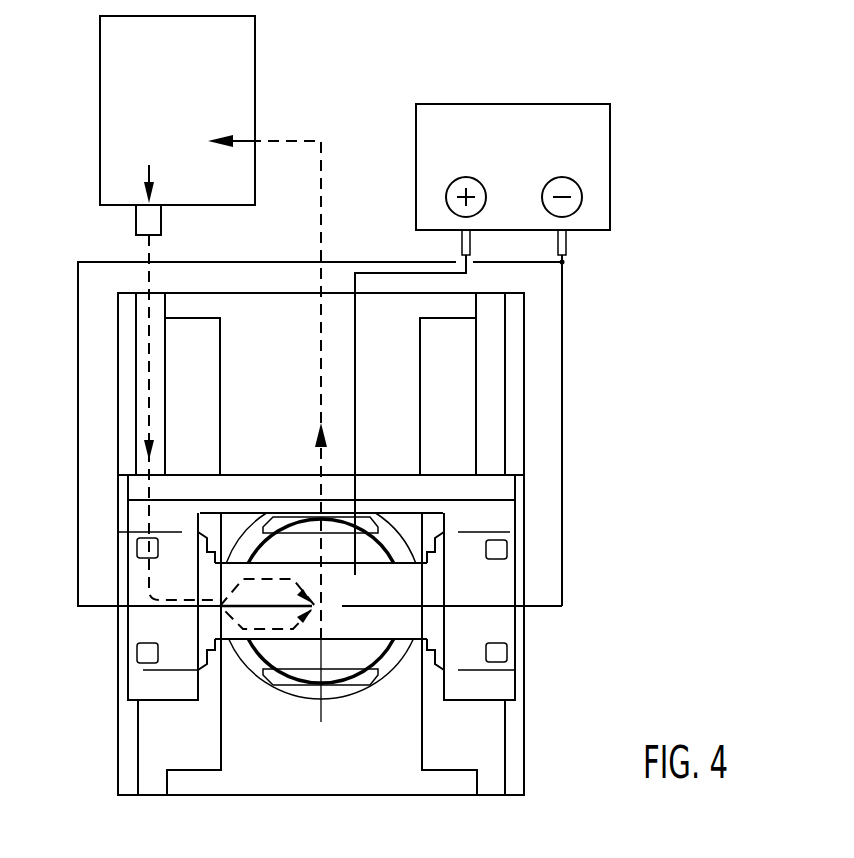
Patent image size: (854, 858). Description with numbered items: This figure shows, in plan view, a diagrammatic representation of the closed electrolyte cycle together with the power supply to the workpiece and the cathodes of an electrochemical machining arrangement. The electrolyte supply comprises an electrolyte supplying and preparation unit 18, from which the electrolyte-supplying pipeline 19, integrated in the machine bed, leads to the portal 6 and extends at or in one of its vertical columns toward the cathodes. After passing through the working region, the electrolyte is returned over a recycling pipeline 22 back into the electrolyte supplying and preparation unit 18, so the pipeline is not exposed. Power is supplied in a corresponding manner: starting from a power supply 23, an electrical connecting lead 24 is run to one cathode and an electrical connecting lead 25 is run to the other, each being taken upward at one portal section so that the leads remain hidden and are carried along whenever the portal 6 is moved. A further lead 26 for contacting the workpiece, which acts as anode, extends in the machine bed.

The portal 6 is at (97, 505).
The electrolyte supplying and preparation unit 18 is at (113, 67).
The electrolyte-supplying pipeline 19 is at (147, 375).
The recycling pipeline 22 is at (322, 172).
The power supply 23 is at (593, 148).
The electrical connecting lead 24 is at (564, 358).
The electrical connecting lead 25 is at (78, 302).
The lead for contacting the workpiece 26 is at (356, 356).